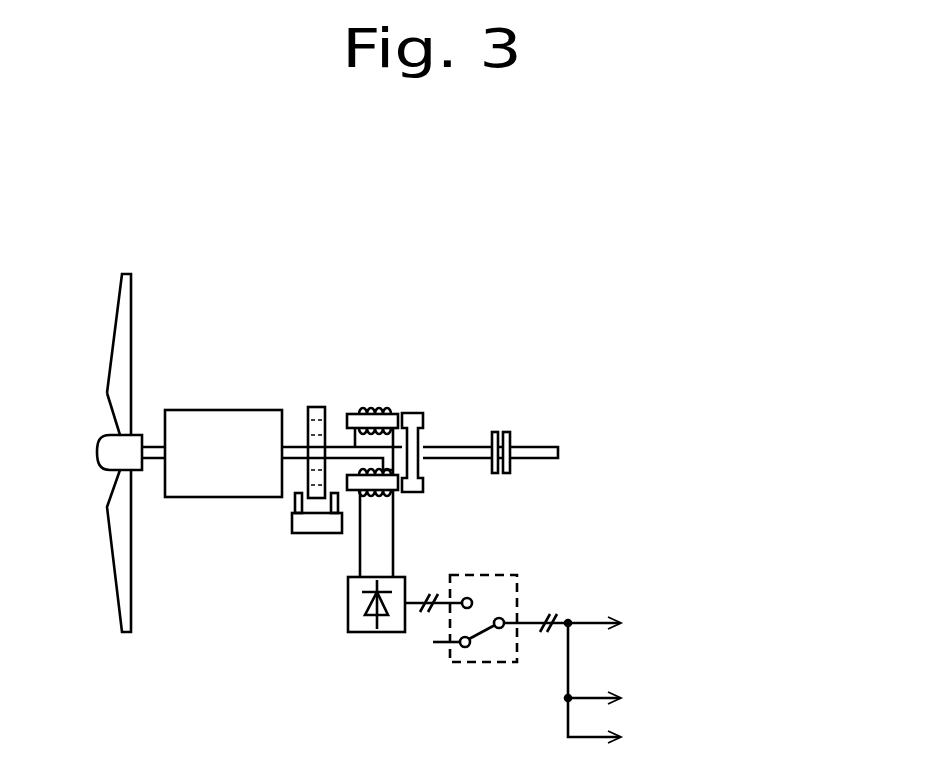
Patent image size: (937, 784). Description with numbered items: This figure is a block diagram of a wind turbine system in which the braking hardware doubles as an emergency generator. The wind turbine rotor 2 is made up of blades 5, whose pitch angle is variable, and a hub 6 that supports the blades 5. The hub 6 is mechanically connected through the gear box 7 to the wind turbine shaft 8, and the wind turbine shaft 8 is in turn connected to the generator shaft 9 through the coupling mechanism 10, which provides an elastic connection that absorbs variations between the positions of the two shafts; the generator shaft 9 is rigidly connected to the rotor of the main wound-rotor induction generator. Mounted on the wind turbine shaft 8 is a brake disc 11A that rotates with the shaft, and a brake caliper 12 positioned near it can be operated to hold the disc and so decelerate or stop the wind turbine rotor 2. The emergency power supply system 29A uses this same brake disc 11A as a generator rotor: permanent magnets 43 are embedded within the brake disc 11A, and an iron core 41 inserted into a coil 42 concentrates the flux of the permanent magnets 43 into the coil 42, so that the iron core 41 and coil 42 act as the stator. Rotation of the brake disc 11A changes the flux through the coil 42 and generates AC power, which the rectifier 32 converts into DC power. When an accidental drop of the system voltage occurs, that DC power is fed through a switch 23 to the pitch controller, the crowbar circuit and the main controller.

The wind turbine rotor 2 is at (99, 258).
The blades 5 is at (114, 338).
The hub 6 is at (97, 453).
The gear box 7 is at (218, 410).
The wind turbine shaft 8 is at (463, 460).
The generator shaft 9 is at (533, 460).
The coupling mechanism 10 is at (507, 431).
The brake disc 11A is at (318, 406).
The brake caliper 12 is at (310, 536).
The switch 23 is at (482, 630).
The emergency power supply system 29A is at (332, 656).
The rectifier 32 is at (383, 633).
The iron core 41 is at (407, 412).
The coil 42 is at (363, 411).
The permanent magnets 43 is at (306, 422).